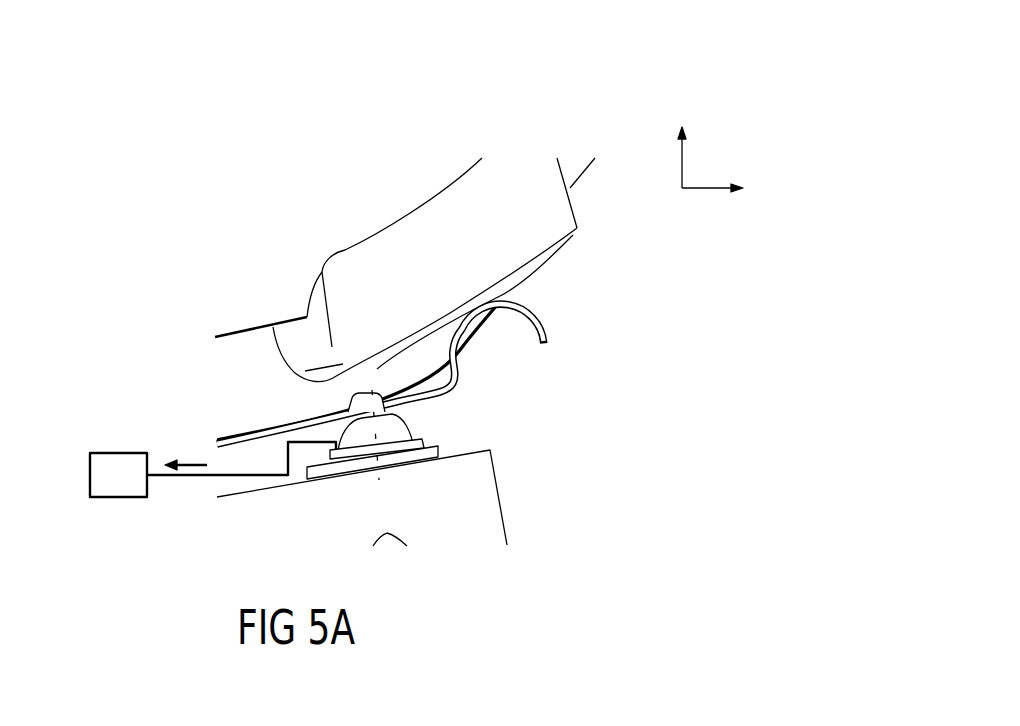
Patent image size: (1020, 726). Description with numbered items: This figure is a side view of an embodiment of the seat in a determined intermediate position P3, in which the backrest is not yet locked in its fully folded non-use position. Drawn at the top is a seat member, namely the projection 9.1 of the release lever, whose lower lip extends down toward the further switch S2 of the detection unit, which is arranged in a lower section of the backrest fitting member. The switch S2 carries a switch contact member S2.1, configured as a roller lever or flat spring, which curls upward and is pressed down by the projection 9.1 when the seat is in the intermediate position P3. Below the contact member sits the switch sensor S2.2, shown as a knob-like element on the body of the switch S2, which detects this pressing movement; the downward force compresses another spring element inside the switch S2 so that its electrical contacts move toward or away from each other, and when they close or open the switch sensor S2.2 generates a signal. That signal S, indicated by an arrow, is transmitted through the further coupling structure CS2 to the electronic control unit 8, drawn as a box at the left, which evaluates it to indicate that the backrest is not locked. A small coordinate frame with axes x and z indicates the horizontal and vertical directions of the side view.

The intermediate position P3 is at (370, 185).
The projection 9.1 is at (312, 363).
The switch contact member S2.1 is at (542, 331).
The switch sensor S2.2 is at (412, 430).
The switch S2 is at (487, 511).
The further coupling structure CS2 is at (160, 477).
The electronic control unit 8 is at (127, 492).
The sensor signal S is at (186, 450).
The x axis x is at (722, 191).
The z axis z is at (689, 147).